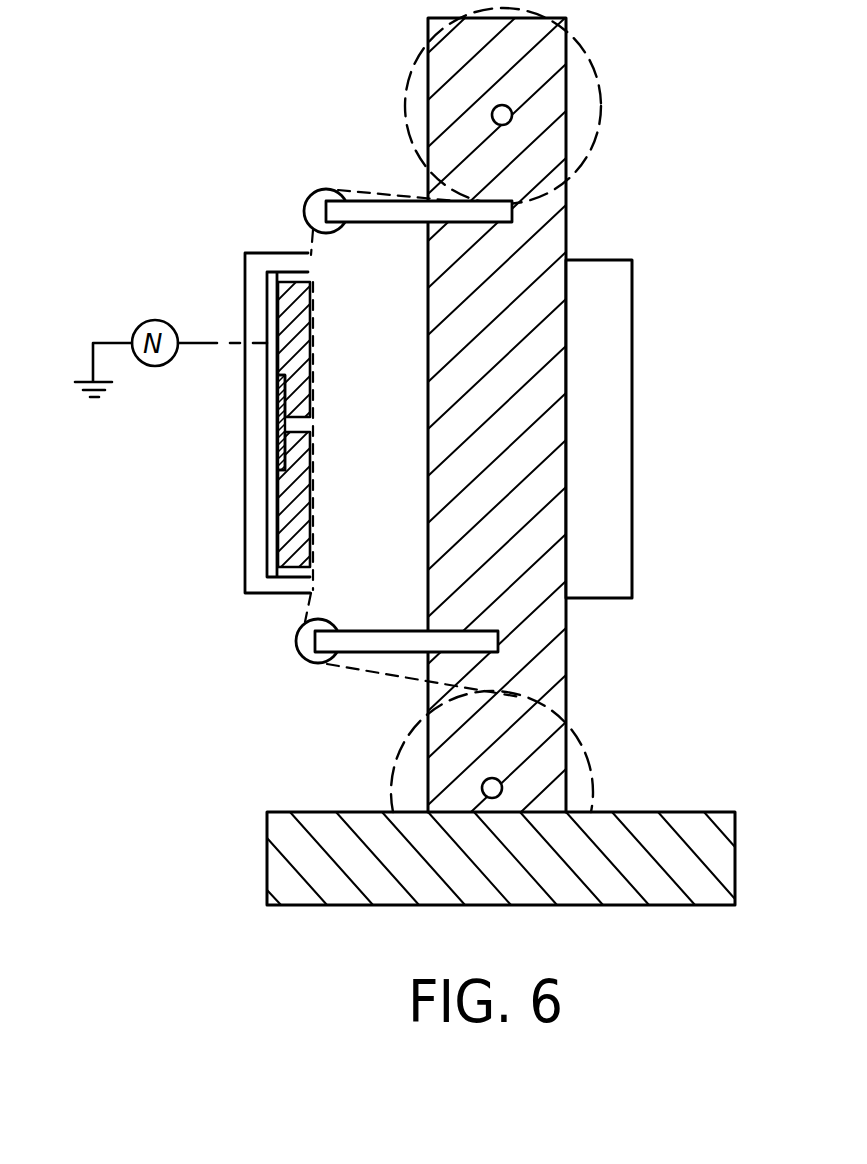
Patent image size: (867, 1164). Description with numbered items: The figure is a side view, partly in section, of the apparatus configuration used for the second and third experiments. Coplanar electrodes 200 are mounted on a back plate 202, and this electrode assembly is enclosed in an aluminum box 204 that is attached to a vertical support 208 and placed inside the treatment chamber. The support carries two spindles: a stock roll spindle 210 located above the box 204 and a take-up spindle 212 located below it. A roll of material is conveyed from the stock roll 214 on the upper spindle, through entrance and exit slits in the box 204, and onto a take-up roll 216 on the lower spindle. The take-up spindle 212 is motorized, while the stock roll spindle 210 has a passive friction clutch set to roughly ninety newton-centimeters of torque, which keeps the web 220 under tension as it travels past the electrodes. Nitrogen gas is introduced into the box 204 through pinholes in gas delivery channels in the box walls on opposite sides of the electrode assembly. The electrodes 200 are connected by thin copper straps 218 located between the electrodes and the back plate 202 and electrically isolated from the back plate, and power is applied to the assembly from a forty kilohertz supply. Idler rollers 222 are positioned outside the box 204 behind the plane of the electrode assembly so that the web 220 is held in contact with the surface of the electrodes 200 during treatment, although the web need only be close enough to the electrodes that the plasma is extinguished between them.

The coplanar electrodes 200 is at (293, 320).
The back plate 202 is at (270, 543).
The aluminum box 204 is at (620, 372).
The vertical support 208 is at (566, 237).
The stock roll spindle 210 is at (492, 106).
The take-up spindle 212 is at (482, 786).
The stock roll 214 is at (605, 110).
The take-up roll 216 is at (592, 781).
The thin copper straps 218 is at (275, 440).
The web 220 is at (376, 682).
The idler rollers 222 is at (313, 200).